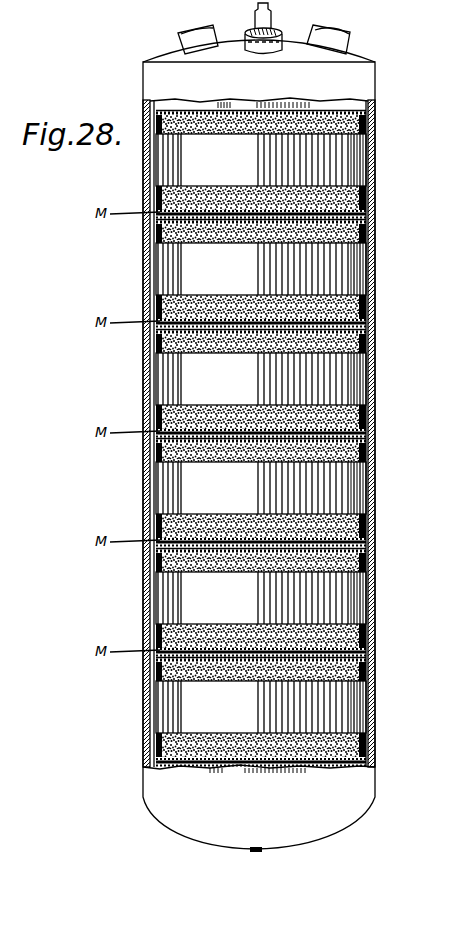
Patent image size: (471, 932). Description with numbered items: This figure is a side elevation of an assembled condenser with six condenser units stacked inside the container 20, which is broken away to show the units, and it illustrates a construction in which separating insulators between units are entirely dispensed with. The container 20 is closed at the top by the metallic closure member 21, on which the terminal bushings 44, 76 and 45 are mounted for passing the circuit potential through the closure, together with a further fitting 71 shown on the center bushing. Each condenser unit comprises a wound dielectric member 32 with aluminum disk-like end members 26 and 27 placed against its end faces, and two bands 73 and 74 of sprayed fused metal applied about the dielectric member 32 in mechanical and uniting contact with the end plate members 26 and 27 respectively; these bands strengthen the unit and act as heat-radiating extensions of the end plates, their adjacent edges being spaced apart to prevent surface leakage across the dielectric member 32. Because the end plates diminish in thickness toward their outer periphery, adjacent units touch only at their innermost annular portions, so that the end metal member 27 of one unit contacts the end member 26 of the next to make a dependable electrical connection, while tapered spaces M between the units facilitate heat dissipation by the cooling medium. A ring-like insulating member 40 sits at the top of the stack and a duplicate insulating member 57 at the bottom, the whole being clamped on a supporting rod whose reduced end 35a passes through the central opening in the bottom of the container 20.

The container 20 is at (348, 818).
The closure member 21 is at (337, 59).
The disk-like member 26 is at (368, 113).
The disk-like member 27 is at (368, 214).
The dielectric member 32 is at (352, 166).
The reduced end of supporting rod 35a is at (262, 851).
The ring-like insulating member 40 is at (262, 100).
The insulating bushing 44 is at (193, 34).
The insulating bushing 45 is at (335, 32).
The insulating member 57 is at (275, 773).
The stem 71 is at (272, 14).
The sprayed metal band 73 is at (362, 128).
The sprayed metal band 74 is at (362, 196).
The terminal bushing 76 is at (278, 31).